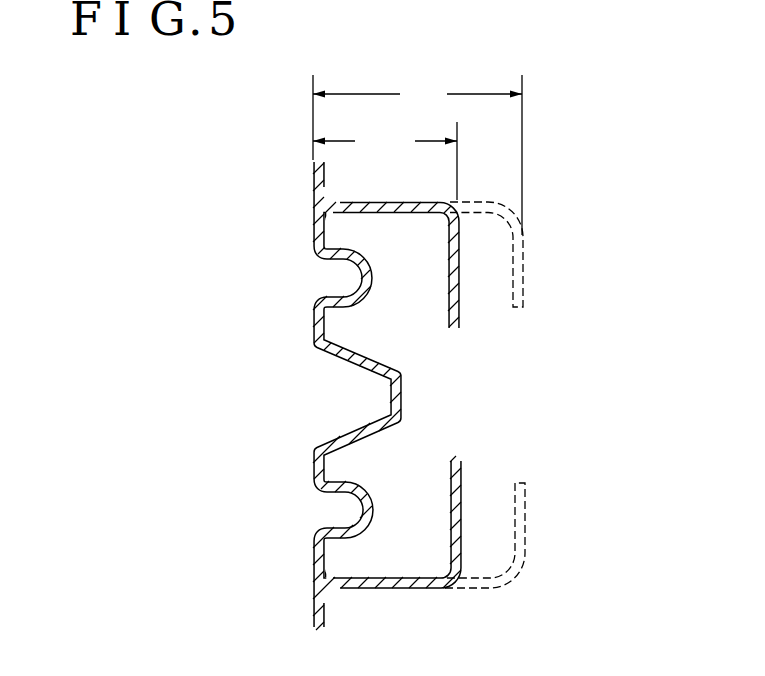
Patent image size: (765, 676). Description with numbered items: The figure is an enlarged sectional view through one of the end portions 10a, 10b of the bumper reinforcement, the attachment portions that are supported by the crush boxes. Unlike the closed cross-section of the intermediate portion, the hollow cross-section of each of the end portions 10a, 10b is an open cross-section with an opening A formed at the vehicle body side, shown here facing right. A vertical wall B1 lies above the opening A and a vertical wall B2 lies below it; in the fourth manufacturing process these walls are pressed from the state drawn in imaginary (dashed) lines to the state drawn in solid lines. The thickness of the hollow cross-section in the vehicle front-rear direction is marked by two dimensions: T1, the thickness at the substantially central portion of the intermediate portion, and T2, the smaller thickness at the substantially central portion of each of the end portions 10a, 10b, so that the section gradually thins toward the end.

The end portion 10a is at (334, 396).
The end portion 10b is at (350, 436).
The vertical wall B1 is at (460, 277).
The vertical wall B2 is at (462, 517).
The opening A is at (453, 393).
The thickness T1 is at (417, 155).
The thickness T2 is at (385, 161).